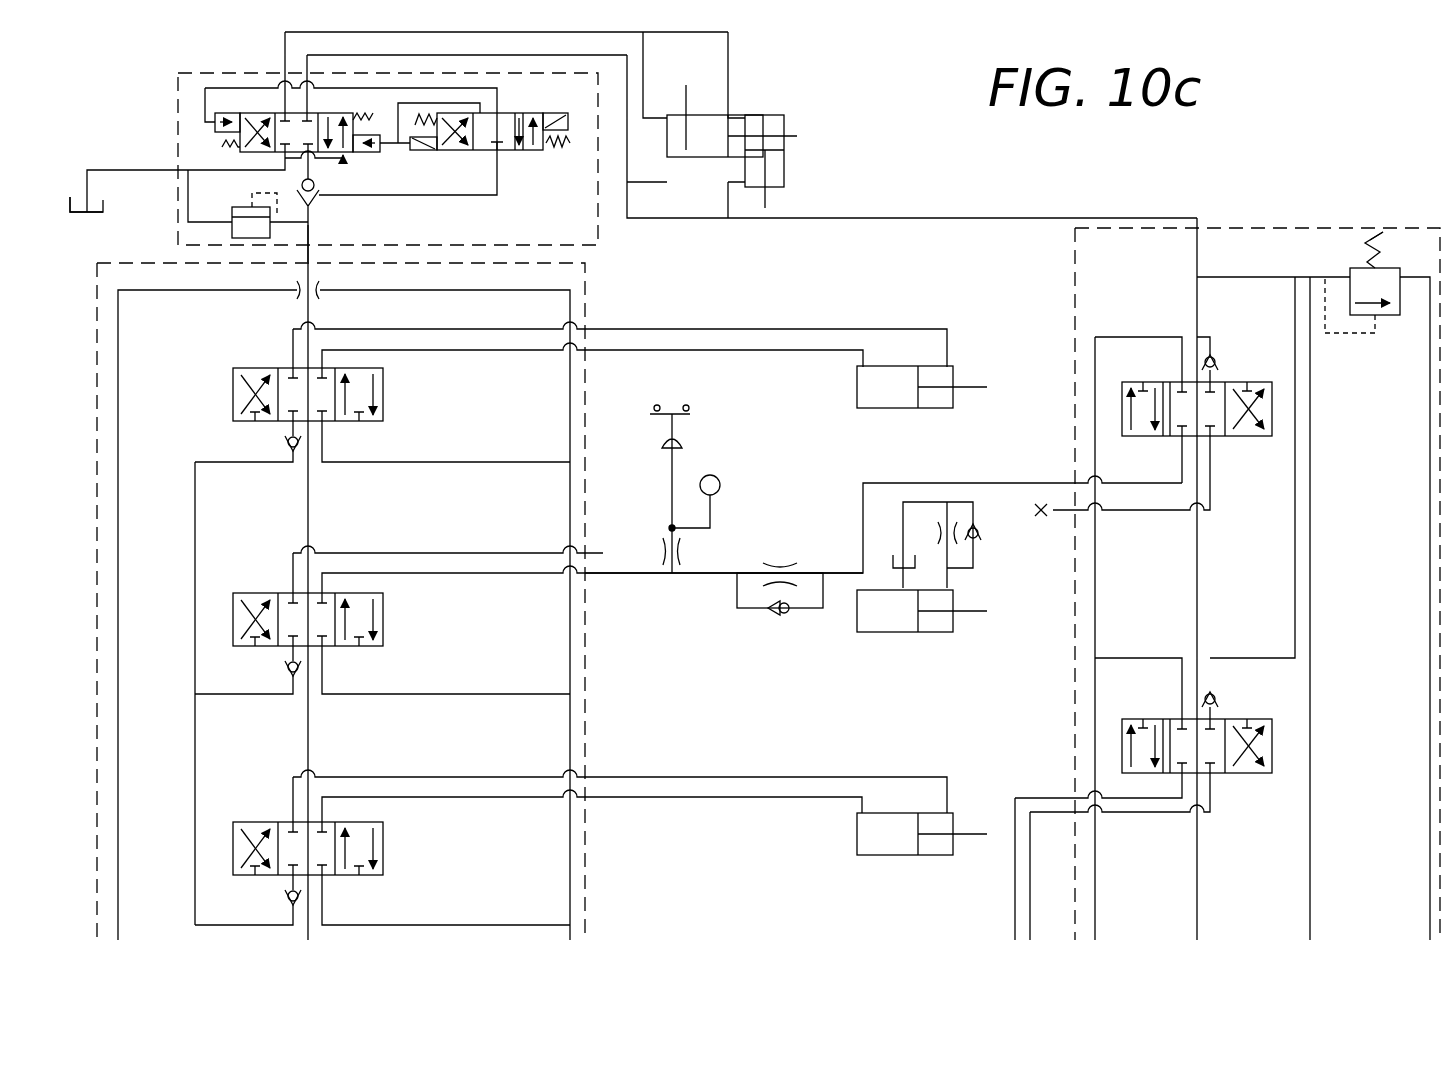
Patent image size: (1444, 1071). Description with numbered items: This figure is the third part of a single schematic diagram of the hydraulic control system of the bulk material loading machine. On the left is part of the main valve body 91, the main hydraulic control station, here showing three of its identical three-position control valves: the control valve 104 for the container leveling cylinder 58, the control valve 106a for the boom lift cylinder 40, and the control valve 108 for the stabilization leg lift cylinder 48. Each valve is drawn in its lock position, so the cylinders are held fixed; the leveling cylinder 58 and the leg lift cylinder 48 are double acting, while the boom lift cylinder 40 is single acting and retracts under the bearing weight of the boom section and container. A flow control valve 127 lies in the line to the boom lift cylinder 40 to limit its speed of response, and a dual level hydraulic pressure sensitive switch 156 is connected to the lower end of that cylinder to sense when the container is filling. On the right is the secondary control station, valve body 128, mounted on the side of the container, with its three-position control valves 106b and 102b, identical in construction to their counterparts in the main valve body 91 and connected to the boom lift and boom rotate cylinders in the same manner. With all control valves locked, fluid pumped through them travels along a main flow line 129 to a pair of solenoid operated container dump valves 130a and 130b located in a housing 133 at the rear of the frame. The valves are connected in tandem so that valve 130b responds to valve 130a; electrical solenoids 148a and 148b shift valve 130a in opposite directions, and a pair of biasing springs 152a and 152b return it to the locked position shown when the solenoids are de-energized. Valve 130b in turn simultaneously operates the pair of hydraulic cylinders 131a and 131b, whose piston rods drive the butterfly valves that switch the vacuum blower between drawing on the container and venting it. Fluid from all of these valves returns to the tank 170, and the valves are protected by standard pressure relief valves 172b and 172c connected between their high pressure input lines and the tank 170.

The biasing spring 152b is at (423, 115).
The electrical solenoid 148b is at (557, 113).
The housing 133 is at (177, 140).
The hydraulic cylinder 131b is at (787, 136).
The hydraulic cylinder 131a is at (705, 188).
The tank 170 is at (103, 205).
The pressure relief valve 172c is at (240, 197).
The container dump valve 130b is at (343, 160).
The electrical solenoid 148a is at (420, 150).
The biasing spring 152a is at (557, 150).
The container dump valve 130a is at (525, 160).
The main flow line 129 is at (305, 233).
The control valve 108 is at (230, 397).
The control valve 106a is at (230, 615).
The control valve 104 is at (232, 845).
The stabilization leg lift cylinder 48 is at (857, 388).
The dual level hydraulic pressure sensitive switch 156 is at (682, 440).
The flow control valve 127 is at (737, 593).
The boom lift cylinder 40 is at (890, 634).
The valve body 91 is at (588, 660).
The valve body 128 is at (1068, 612).
The container leveling cylinder 58 is at (857, 845).
The control valve 106b is at (1276, 410).
The control valve 102b is at (1278, 735).
The pressure relief valve 172b is at (1385, 318).